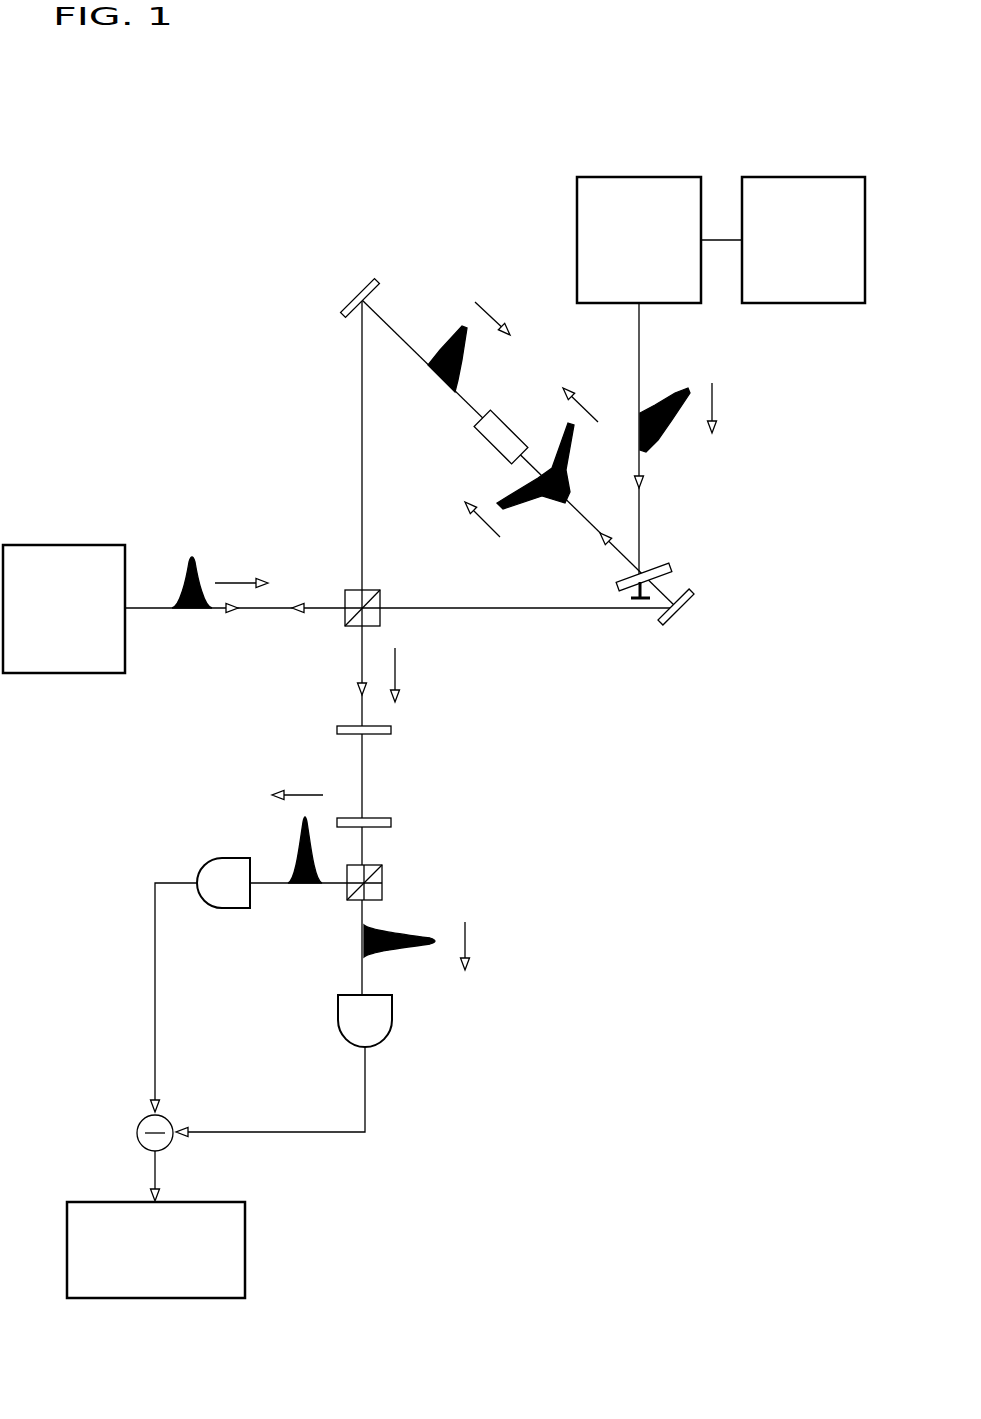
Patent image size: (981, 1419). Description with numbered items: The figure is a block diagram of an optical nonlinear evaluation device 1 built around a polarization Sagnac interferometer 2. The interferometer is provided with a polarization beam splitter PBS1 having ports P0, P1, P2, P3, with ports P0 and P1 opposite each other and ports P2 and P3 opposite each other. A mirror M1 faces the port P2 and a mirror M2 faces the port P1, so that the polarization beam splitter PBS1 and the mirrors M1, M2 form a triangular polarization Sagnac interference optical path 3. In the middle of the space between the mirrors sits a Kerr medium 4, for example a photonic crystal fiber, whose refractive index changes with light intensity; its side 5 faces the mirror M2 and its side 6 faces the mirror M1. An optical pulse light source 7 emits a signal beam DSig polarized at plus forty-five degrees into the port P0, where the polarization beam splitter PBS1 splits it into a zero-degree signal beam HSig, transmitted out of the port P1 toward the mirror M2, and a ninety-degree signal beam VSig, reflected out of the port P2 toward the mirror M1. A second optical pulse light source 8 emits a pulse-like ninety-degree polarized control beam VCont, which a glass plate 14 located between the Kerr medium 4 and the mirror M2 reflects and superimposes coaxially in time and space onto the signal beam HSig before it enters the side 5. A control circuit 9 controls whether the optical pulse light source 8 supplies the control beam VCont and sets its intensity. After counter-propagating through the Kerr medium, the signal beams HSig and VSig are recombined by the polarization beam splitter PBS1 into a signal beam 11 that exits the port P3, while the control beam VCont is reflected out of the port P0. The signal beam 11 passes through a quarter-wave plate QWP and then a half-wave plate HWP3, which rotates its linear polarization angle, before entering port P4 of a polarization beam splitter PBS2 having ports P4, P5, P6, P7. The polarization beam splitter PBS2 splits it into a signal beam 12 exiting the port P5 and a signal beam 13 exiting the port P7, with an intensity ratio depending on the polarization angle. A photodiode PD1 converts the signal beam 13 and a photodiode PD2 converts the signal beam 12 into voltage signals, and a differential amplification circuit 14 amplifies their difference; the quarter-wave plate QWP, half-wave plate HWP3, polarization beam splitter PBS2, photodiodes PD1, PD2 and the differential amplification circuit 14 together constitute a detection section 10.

The optical nonlinear evaluation device 1 is at (96, 199).
The polarization Sagnac interferometer 2 is at (466, 220).
The polarization Sagnac interference optical path 3 is at (385, 321).
The Kerr medium 4 is at (507, 413).
The side 5 is at (528, 452).
The side 6 is at (487, 412).
The optical pulse light source 7 is at (64, 544).
The optical pulse light source 8 is at (637, 176).
The control circuit 9 is at (803, 176).
The detection section 10 is at (524, 795).
The signal beam 11 is at (397, 667).
The signal beam 12 is at (468, 940).
The signal beam 13 is at (305, 792).
The glass plate / differential amplification circuit 14 is at (661, 569).
The mirror M1 is at (348, 298).
The mirror M2 is at (678, 620).
The polarization beam splitter PBS1 is at (382, 621).
The polarization beam splitter PBS2 is at (383, 882).
The quarter-wave plate QWP is at (391, 731).
The half-wave plate HWP3 is at (391, 823).
The photodiode PD1 is at (230, 857).
The photodiode PD2 is at (392, 1010).
The port P0 is at (345, 598).
The port P1 is at (381, 595).
The port P2 is at (357, 588).
The port P3 is at (350, 628).
The port P4 is at (383, 867).
The port P5 is at (381, 901).
The port P6 is at (385, 878).
The port P7 is at (346, 890).
The signal beam VSig is at (489, 310).
The signal beam HSig is at (483, 521).
The control beam VCont is at (582, 406).
The signal beam DSig is at (236, 582).